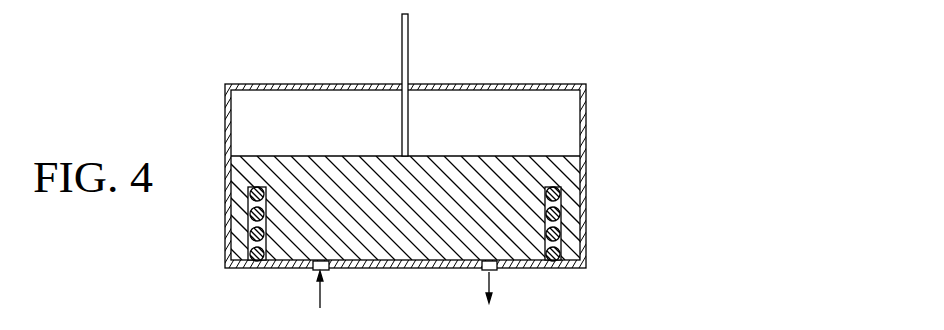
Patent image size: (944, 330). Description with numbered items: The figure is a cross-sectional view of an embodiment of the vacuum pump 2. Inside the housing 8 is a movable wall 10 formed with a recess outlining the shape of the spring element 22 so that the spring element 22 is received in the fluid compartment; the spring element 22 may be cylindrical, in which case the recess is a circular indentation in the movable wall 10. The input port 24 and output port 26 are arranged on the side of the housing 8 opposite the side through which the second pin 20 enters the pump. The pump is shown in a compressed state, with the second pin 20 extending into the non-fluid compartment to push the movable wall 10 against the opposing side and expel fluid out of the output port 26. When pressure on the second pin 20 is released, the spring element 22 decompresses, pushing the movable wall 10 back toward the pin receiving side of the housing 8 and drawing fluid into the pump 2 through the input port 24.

The pump 2 is at (205, 71).
The housing 8 is at (586, 115).
The movable wall 10 is at (573, 193).
The second pin 20 is at (407, 107).
The spring element 22 is at (555, 262).
The input port 24 is at (313, 272).
The output port 26 is at (497, 272).